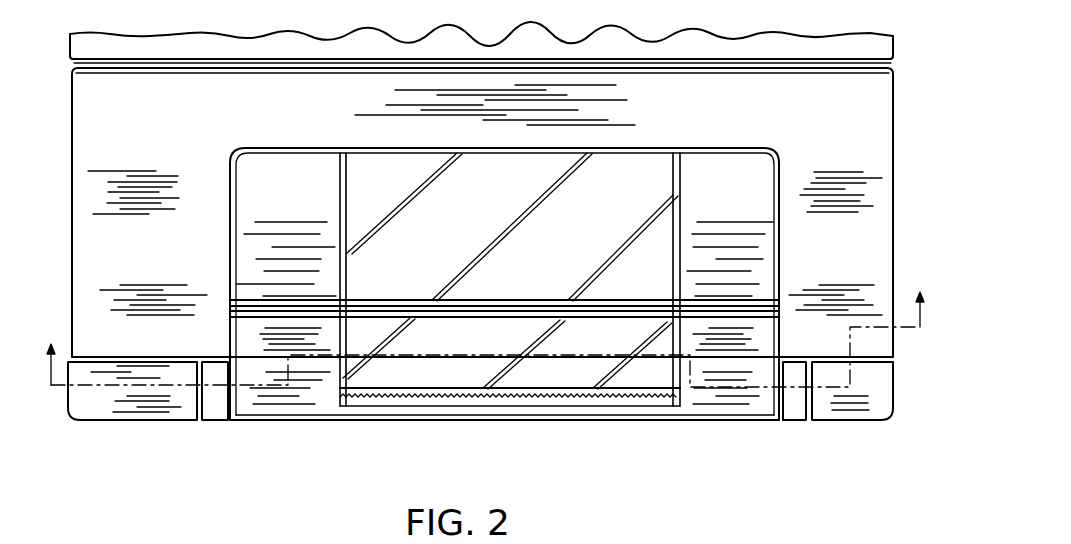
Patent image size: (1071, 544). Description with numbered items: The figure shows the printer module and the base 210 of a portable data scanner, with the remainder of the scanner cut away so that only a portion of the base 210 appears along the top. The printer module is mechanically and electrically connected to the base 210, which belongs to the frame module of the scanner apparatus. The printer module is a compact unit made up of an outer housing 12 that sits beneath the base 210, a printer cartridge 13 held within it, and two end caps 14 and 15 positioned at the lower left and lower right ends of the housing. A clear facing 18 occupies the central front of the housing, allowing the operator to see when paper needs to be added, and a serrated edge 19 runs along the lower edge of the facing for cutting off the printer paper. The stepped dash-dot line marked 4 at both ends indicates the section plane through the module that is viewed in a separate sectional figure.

The base 210 is at (811, 39).
The outer housing 12 is at (893, 226).
The printer cartridge 13 is at (720, 411).
The end cap 14 is at (893, 397).
The end cap 15 is at (160, 412).
The clear facing 18 is at (405, 370).
The serrated edge 19 is at (470, 397).
The section line 4- 4 is at (482, 339).